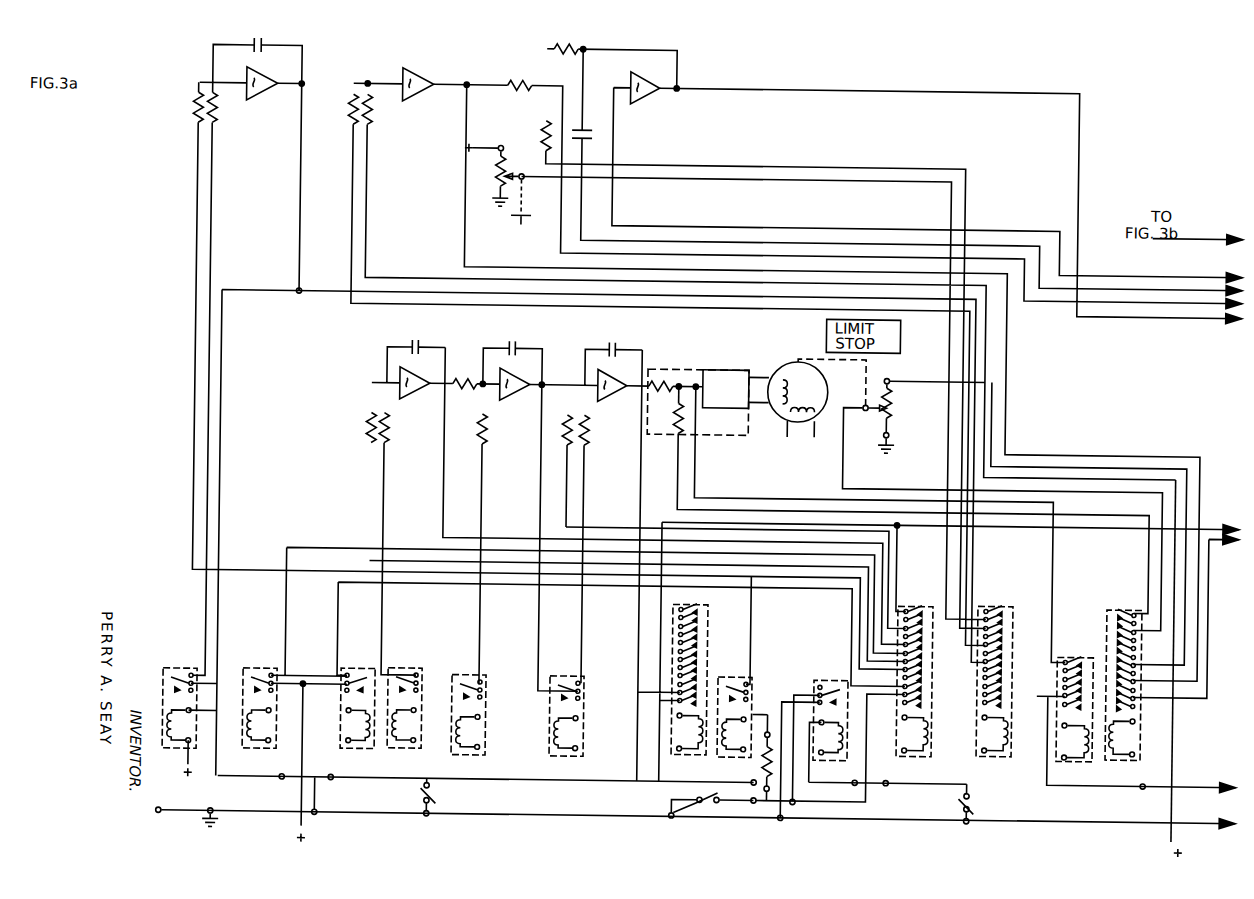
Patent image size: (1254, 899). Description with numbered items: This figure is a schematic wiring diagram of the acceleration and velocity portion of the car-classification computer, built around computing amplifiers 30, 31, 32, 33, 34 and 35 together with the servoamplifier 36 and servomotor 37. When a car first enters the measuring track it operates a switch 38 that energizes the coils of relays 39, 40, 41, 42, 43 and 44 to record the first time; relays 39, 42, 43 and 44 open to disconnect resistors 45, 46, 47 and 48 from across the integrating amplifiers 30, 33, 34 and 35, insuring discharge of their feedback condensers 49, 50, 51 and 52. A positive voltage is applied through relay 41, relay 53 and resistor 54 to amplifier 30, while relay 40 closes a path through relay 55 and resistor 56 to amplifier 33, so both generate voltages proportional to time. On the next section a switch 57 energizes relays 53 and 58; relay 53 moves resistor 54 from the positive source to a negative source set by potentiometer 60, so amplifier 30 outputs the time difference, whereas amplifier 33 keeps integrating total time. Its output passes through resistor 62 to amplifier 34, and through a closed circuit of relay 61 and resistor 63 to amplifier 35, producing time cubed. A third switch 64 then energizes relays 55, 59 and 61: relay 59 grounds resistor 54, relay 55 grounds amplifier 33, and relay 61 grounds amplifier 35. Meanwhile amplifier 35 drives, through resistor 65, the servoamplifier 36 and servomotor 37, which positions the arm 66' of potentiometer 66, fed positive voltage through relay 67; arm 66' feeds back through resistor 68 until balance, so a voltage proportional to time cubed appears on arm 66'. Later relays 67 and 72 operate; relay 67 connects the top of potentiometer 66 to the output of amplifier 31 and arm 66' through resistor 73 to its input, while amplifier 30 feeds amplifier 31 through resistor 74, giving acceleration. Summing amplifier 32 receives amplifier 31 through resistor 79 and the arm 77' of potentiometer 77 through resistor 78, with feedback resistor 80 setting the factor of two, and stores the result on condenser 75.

The integrating amplifier 30 is at (258, 80).
The amplifier 31 is at (411, 81).
The summing amplifier 32 is at (656, 78).
The integrating amplifier 33 is at (414, 393).
The integrating amplifier 34 is at (512, 394).
The integrating amplifier 35 is at (610, 394).
The servoamplifier 36 is at (719, 368).
The servomotor 37 is at (774, 420).
The switch 38 is at (438, 814).
The relay 39 is at (174, 670).
The relay 40 is at (260, 672).
The relay 41 is at (366, 672).
The relay 42 is at (416, 672).
The relay 43 is at (470, 676).
The relay 44 is at (566, 676).
The resistor 45 is at (210, 120).
The resistor 46 is at (388, 426).
The resistor 47 is at (487, 434).
The resistor 48 is at (587, 432).
The feedback condenser 49 is at (257, 43).
The feedback condenser 50 is at (406, 340).
The feedback condenser 51 is at (510, 341).
The feedback condenser 52 is at (610, 341).
The relay 53 is at (741, 674).
The resistor 54 is at (188, 120).
The relay 55 is at (911, 604).
The resistor 56 is at (364, 428).
The switch 57 is at (704, 814).
The relay 58 is at (702, 608).
The relay 59 is at (822, 678).
The potentiometer 60 is at (776, 804).
The relay 61 is at (998, 602).
The resistor 62 is at (474, 380).
The resistor 63 is at (564, 412).
The switch 64 is at (976, 818).
The resistor 65 is at (667, 382).
The potentiometer 66 is at (901, 416).
The potentiometer arm 66' is at (866, 426).
The relay 67 is at (1124, 606).
The resistor 68 is at (673, 424).
The relay 72 is at (1086, 654).
The resistor 73 is at (369, 122).
The resistor 74 is at (343, 116).
The condenser 75 is at (582, 132).
The potentiometer 77 is at (486, 176).
The potentiometer arm 77' is at (510, 176).
The resistor 78 is at (539, 128).
The resistor 79 is at (507, 84).
The feedback resistor 80 is at (551, 48).